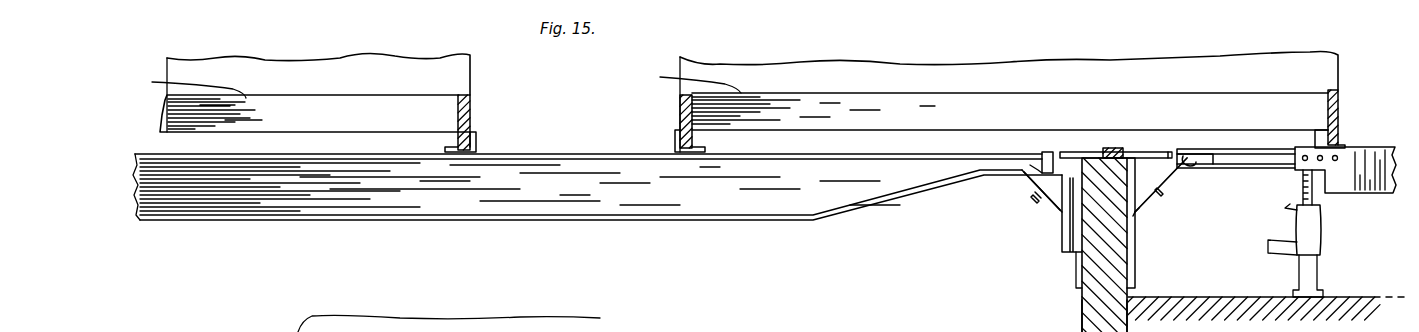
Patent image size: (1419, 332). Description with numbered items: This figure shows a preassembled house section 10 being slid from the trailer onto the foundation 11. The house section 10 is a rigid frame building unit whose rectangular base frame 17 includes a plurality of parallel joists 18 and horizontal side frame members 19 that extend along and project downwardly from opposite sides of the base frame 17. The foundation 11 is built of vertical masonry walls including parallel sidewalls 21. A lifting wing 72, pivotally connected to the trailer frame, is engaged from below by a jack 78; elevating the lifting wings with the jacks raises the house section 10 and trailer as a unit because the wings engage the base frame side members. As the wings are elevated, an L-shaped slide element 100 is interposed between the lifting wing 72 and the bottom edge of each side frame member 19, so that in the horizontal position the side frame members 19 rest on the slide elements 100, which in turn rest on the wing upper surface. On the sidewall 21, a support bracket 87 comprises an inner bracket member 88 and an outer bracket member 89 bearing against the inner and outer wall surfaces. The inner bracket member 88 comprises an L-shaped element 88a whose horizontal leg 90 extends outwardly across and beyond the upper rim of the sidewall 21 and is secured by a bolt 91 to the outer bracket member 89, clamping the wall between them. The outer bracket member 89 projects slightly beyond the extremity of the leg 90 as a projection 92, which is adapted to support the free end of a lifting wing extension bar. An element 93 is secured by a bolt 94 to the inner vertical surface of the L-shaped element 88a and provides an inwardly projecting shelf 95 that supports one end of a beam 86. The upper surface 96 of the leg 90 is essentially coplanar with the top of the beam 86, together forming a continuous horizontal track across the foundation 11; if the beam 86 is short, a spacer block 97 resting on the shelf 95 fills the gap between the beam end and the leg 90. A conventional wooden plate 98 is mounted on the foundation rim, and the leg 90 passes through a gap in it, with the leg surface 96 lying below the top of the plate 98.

The house section 10 is at (336, 83).
The foundation 11 is at (1082, 298).
The base frame 17 is at (558, 201).
The joists 18 is at (303, 123).
The side frame members 19 is at (470, 109).
The sidewalls 21 is at (1090, 313).
The lifting wing 72 is at (1360, 195).
The jack 78 is at (1310, 236).
The beam 86 is at (598, 193).
The support bracket 87 is at (1186, 233).
The inner bracket member 88 is at (1055, 208).
The L-shaped element 88a is at (1062, 237).
The outer bracket member 89 is at (1148, 214).
The horizontal leg 90 is at (1152, 149).
The bolt 91 is at (1162, 192).
The projection 92 is at (1190, 166).
The element 93 is at (1030, 181).
The bolt 94 is at (1030, 201).
The shelf 95 is at (1030, 166).
The upper surface 96 is at (1085, 158).
The spacer block 97 is at (1047, 152).
The wooden plate 98 is at (1112, 148).
The slide element 100 is at (476, 149).